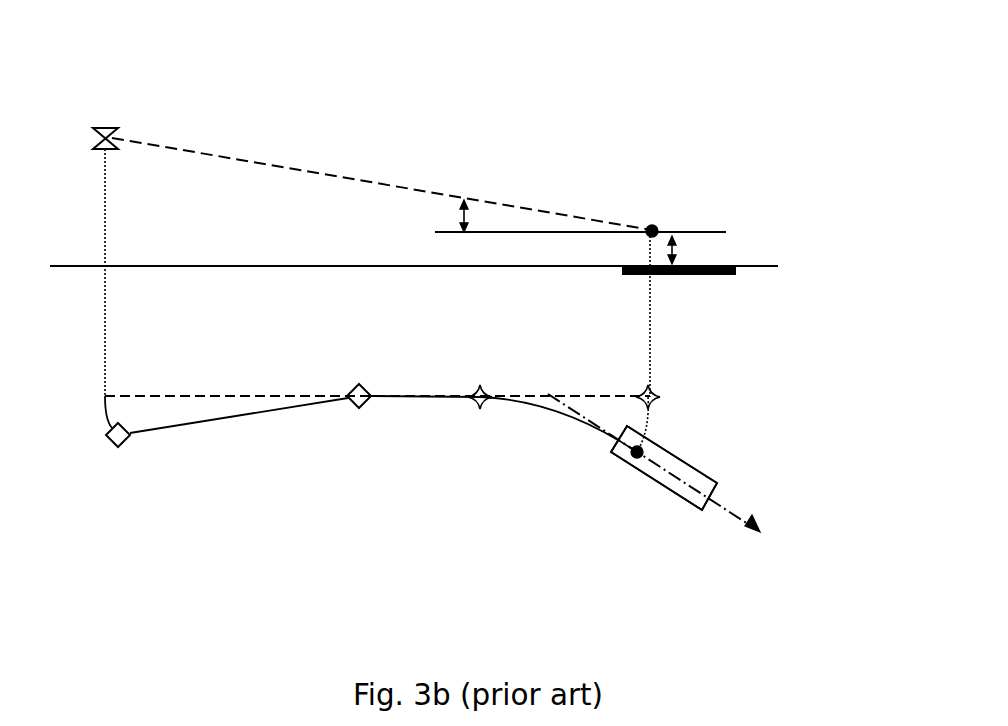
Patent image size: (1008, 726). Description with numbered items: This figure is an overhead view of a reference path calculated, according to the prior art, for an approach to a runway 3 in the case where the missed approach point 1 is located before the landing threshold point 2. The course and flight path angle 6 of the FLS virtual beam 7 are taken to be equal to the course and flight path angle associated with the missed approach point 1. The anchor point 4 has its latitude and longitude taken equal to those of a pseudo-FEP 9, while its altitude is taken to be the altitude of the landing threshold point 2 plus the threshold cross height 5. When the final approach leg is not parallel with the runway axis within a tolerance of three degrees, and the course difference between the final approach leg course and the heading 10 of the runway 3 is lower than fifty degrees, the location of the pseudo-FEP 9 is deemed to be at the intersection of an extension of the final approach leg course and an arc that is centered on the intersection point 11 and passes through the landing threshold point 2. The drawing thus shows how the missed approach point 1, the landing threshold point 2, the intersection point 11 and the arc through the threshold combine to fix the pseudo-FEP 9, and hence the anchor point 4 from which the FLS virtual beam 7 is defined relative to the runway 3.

The missed approach point 1 is at (470, 388).
The landing threshold point 2 is at (630, 457).
The runway 3 is at (720, 275).
The anchor point 4 is at (650, 228).
The threshold cross height 5 is at (690, 248).
The flight path angle 6 is at (453, 220).
The FLS virtual beam 7 is at (233, 160).
The pseudo-FEP 9 is at (657, 393).
The heading of the runway 10 is at (687, 483).
The intersection point 11 is at (555, 393).